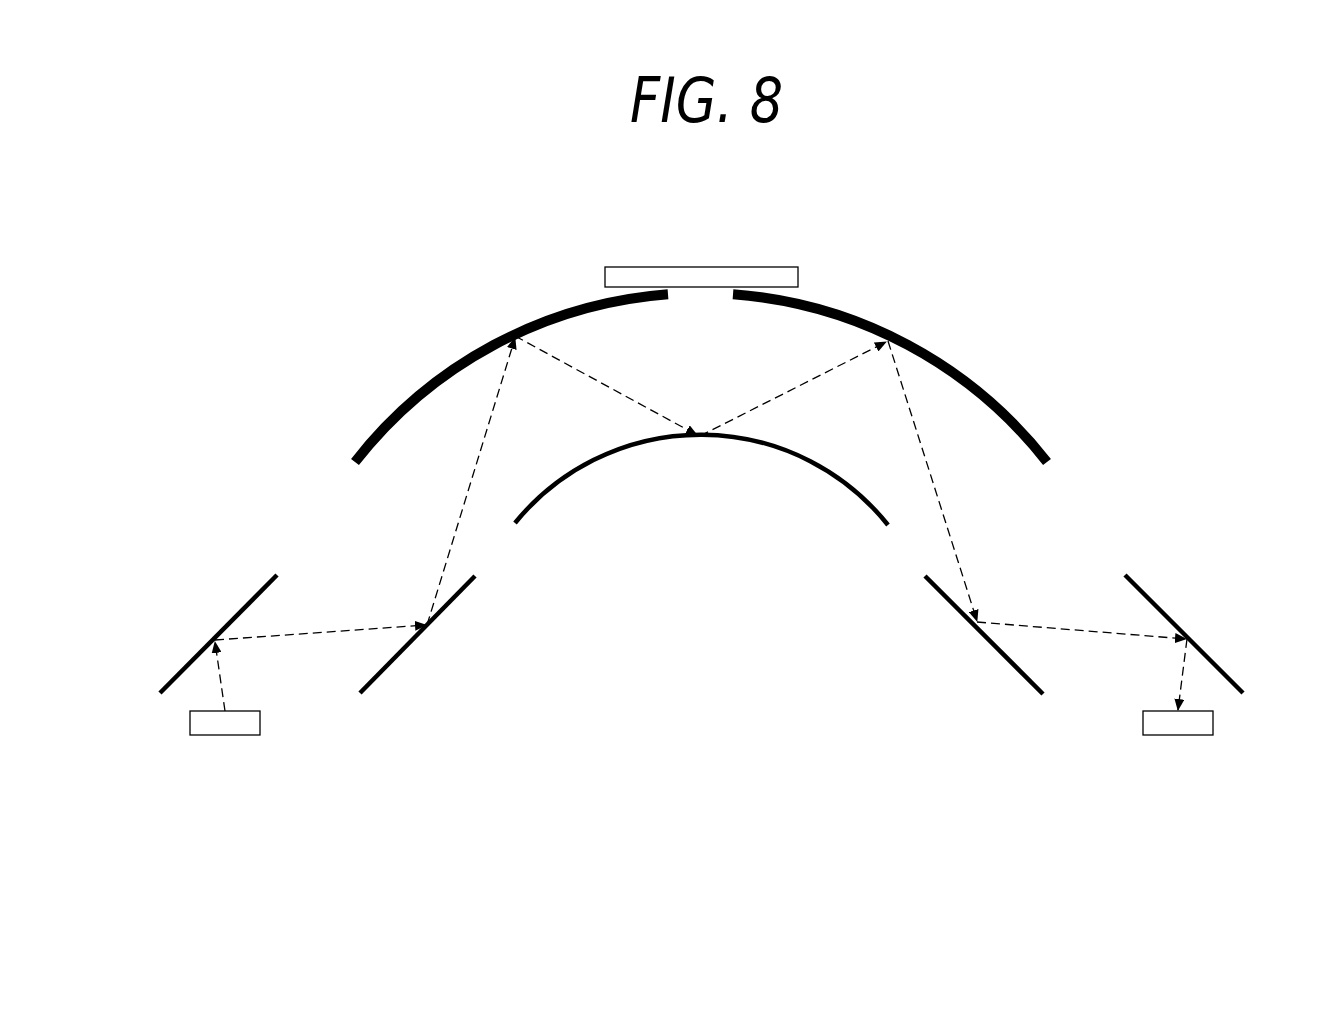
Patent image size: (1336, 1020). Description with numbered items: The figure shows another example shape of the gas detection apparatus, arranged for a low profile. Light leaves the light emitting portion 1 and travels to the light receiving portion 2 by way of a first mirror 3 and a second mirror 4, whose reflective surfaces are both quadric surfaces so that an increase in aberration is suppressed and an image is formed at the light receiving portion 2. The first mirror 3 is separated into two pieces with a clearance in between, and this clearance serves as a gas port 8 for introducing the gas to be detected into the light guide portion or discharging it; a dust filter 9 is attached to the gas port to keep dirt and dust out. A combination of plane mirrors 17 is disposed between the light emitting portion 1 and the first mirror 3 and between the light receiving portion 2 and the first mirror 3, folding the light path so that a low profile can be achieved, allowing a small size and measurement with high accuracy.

The light emitting portion 1 is at (225, 735).
The light receiving portion 2 is at (1178, 735).
The first mirror 3 is at (512, 335).
The second mirror 4 is at (818, 467).
The opening 8 is at (700, 299).
The dust filter 9 is at (700, 262).
The plane mirrors 17 is at (250, 598).